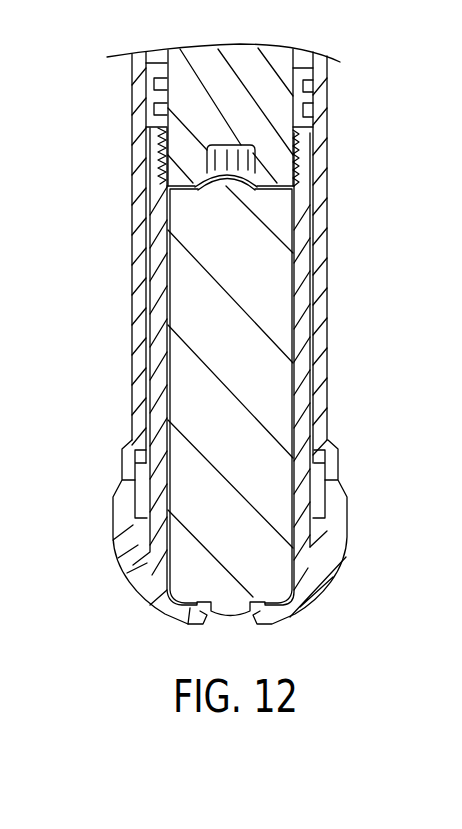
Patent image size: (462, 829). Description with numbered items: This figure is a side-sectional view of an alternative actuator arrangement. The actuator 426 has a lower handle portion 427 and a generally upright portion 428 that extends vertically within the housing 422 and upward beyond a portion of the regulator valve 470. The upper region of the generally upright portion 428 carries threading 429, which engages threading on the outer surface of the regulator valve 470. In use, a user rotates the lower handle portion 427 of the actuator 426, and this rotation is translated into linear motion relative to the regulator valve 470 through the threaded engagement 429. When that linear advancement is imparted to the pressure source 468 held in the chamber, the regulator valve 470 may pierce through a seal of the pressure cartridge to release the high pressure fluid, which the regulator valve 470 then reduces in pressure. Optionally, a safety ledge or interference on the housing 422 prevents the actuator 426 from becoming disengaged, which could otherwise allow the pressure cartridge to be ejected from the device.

The regulator valve 470 is at (271, 101).
The threading 429 is at (304, 171).
The housing 422 is at (335, 292).
The generally upright portion 428 is at (297, 352).
The pressure source 468 is at (187, 369).
The actuator 426 is at (108, 533).
The lower handle portion 427 is at (351, 536).